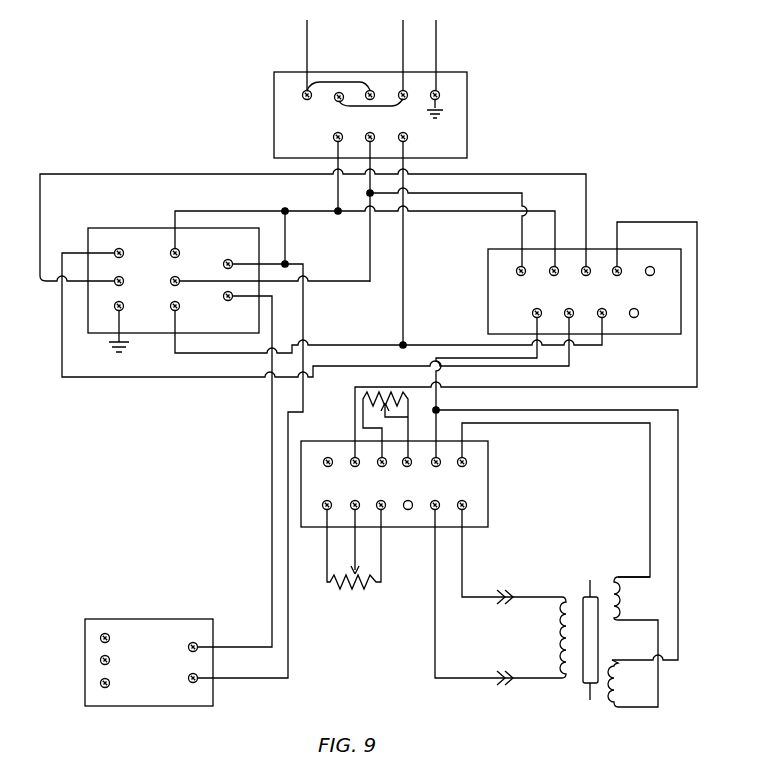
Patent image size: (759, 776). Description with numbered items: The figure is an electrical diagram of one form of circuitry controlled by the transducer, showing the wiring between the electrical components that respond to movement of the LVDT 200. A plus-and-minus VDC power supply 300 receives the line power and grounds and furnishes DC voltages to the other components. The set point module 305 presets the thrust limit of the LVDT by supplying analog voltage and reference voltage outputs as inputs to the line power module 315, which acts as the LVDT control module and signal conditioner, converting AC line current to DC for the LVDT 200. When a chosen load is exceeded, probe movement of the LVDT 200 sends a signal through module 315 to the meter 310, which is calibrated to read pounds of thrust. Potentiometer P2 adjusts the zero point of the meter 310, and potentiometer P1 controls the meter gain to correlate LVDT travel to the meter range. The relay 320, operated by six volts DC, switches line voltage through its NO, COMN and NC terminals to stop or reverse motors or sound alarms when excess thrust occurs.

The LVDT 200 is at (581, 577).
The ±VDC power supply 300 is at (452, 92).
The set point module 305 is at (100, 240).
The meter 310 is at (488, 270).
The line power module 315 is at (475, 480).
The relay 320 is at (150, 619).
The potentiometer P1 is at (348, 407).
The potentiometer P2 is at (348, 605).